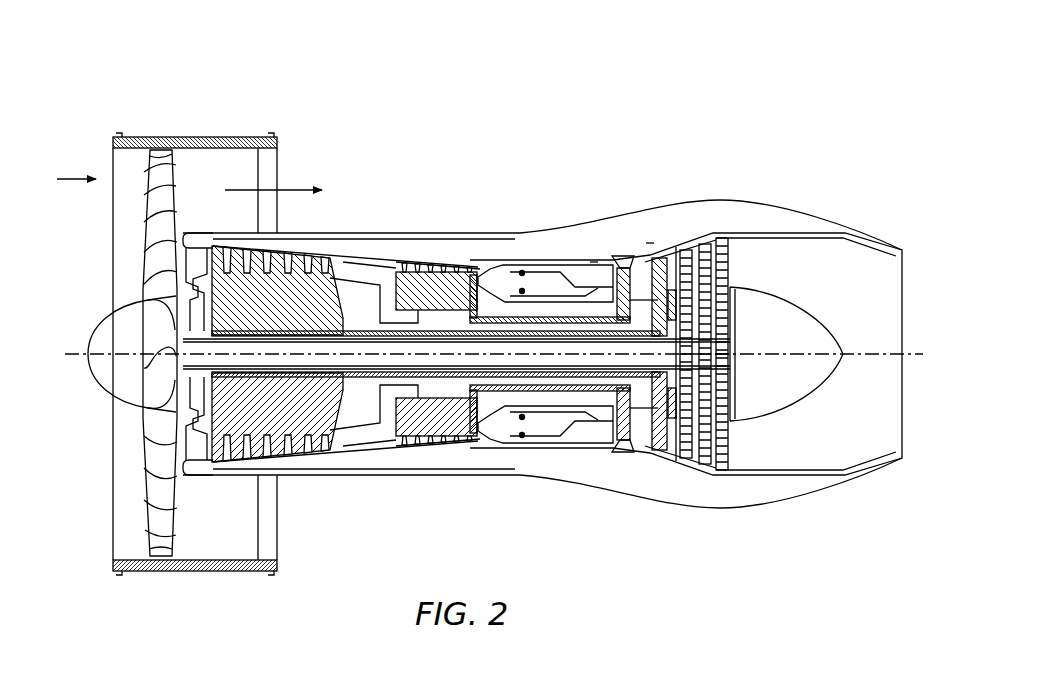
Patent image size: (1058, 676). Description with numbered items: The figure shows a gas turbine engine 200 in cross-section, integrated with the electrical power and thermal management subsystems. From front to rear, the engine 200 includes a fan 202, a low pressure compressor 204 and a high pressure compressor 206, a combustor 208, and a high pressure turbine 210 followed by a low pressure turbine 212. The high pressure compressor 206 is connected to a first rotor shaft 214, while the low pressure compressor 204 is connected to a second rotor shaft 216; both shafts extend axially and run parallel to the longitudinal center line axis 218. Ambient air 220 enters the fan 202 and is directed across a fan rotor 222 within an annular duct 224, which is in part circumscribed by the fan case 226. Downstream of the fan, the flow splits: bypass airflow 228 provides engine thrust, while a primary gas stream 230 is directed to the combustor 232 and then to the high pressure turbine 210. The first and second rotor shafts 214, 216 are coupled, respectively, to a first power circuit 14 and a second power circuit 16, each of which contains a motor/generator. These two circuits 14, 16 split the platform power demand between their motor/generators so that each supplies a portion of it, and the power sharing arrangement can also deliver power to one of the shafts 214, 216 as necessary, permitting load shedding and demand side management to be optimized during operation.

The gas turbine engine 200 is at (653, 64).
The fan 202 is at (111, 393).
The low pressure compressor 204 is at (318, 300).
The high pressure compressor 206 is at (442, 432).
The combustor 208 is at (525, 430).
The high pressure turbine 210 is at (622, 262).
The low pressure turbine 212 is at (724, 249).
The first rotor shaft 214 is at (557, 392).
The second rotor shaft 216 is at (647, 400).
The longitudinal center line axis 218 is at (917, 352).
The ambient air 220 is at (76, 177).
The fan rotor 222 is at (161, 542).
The annular duct 224 is at (262, 530).
The fan case 226 is at (212, 571).
The bypass airflow 228 is at (306, 189).
The primary gas stream 230 is at (394, 283).
The combustor 232 is at (531, 264).
The first power circuit 14 is at (594, 262).
The second power circuit 16 is at (650, 242).